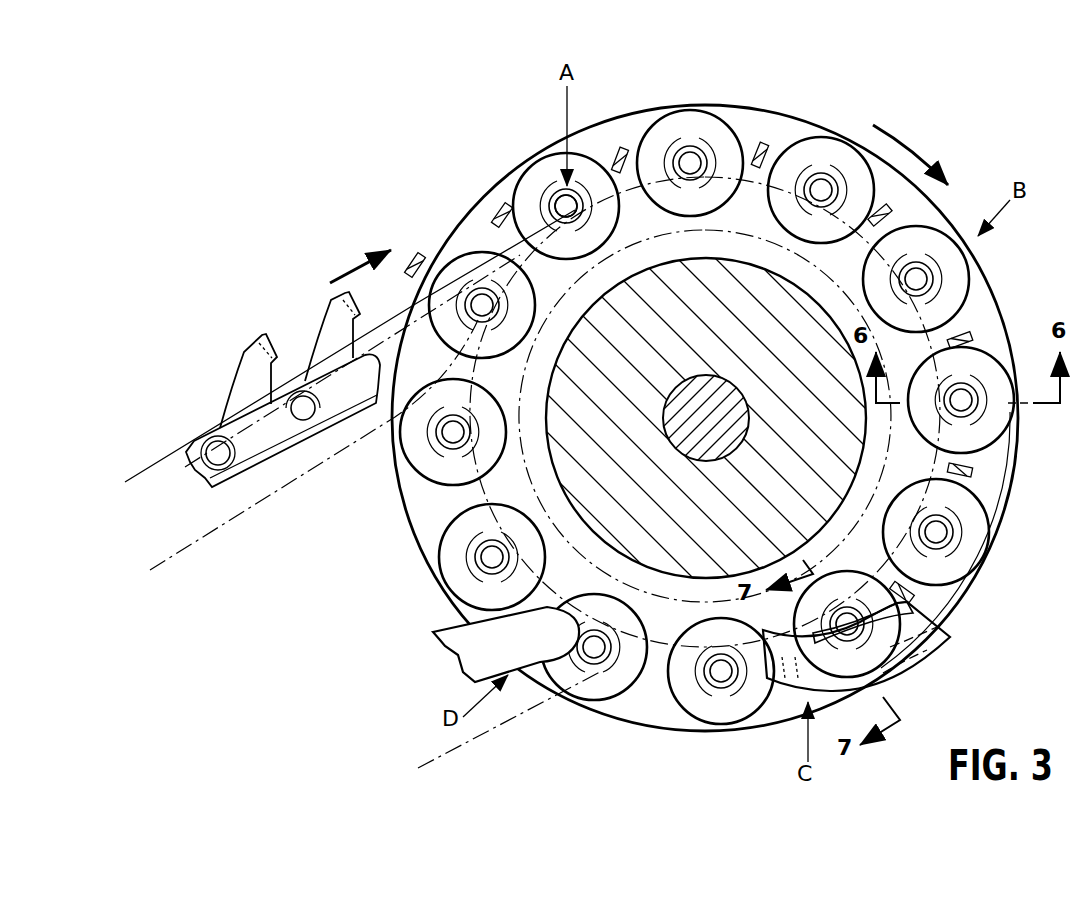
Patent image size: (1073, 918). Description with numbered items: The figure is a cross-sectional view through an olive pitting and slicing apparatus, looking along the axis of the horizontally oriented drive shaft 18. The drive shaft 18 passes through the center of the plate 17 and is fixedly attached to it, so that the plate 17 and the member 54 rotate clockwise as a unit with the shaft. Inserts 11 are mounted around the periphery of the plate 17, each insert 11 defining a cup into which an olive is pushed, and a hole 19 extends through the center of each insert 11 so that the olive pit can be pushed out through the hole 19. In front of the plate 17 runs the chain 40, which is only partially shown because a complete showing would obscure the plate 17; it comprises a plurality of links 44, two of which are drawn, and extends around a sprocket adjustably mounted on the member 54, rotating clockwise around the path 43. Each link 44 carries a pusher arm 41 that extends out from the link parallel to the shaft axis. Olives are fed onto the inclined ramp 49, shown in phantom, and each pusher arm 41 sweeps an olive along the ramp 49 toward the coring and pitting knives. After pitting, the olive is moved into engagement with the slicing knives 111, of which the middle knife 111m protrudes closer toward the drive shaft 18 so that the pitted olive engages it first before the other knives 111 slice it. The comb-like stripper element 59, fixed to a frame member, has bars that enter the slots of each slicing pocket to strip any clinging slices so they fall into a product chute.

The insert 11 is at (521, 178).
The plate 17 is at (481, 204).
The drive shaft 18 is at (650, 416).
The hole 19 is at (560, 190).
The chain 40 is at (284, 328).
The pusher arm 41 is at (417, 252).
The path 43 is at (530, 290).
The link 44 is at (246, 458).
The inclined ramp 49 is at (163, 470).
The member 54 is at (563, 350).
The stripper element 59 is at (437, 628).
The slicing knives 111 is at (920, 668).
The middle knife 111m is at (952, 632).